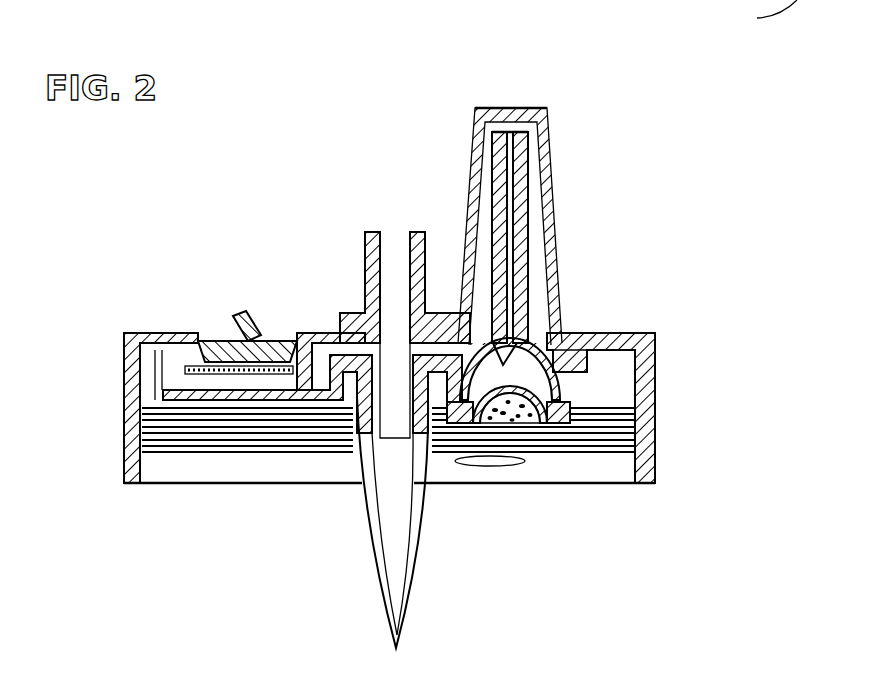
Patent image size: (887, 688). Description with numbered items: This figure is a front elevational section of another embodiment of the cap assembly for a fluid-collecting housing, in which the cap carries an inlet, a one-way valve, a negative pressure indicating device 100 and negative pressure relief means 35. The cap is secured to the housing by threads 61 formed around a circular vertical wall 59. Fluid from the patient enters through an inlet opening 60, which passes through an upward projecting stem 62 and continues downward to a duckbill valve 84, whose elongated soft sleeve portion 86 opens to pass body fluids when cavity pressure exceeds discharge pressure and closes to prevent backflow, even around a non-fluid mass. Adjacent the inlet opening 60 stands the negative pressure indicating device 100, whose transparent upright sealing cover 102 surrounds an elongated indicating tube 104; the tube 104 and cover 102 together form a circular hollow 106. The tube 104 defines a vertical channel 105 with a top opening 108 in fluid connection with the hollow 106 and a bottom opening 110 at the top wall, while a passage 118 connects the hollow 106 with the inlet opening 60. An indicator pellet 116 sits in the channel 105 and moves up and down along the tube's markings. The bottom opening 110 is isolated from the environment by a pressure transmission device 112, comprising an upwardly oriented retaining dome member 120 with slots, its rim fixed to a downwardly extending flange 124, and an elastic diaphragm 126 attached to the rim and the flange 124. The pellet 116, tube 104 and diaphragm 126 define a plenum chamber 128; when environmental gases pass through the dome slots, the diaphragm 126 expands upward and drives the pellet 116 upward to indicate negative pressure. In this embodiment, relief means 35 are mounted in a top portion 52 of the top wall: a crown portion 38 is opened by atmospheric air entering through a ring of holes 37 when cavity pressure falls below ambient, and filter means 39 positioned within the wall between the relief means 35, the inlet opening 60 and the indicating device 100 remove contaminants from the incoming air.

The negative pressure relief means 35 is at (225, 293).
The ring of holes 37 is at (217, 330).
The crown portion 38 is at (232, 366).
The filter means 39 is at (212, 368).
The top portion 52 is at (152, 328).
The circular vertical wall 59 is at (668, 428).
The inlet opening 60 is at (398, 245).
The threads 61 is at (618, 460).
The upward projecting stem 62 is at (365, 265).
The duckbill valve 84 is at (360, 537).
The sleeve portion 86 is at (360, 502).
The negative pressure indicating device 100 is at (577, 150).
The sealing cover 102 is at (547, 190).
The indicating tube 104 is at (483, 218).
The vertical channel 105 is at (540, 133).
The circular hollow 106 is at (492, 192).
The top opening 108 is at (510, 157).
The bottom opening 110 is at (500, 363).
The pressure transmission device 112 is at (532, 445).
The indicator pellet 116 is at (522, 318).
The passage 118 is at (375, 352).
The retaining dome member 120 is at (517, 403).
The flange 124 is at (570, 385).
The elastic diaphragm 126 is at (530, 362).
The plenum chamber 128 is at (545, 375).